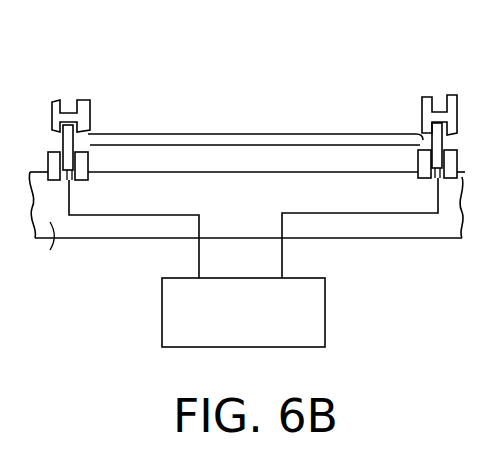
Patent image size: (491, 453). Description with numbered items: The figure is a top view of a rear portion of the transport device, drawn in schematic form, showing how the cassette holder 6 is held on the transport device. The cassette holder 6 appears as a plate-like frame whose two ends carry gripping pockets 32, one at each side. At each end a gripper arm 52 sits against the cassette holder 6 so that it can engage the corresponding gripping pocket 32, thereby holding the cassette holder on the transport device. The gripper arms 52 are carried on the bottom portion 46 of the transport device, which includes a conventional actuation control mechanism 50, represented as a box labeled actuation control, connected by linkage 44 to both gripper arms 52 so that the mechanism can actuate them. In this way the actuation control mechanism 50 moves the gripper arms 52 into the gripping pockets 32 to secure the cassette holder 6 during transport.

The cassette holder 6 is at (271, 140).
The gripping pocket 32 is at (92, 138).
The linkage 44 is at (112, 249).
The bottom portion 46 is at (247, 227).
The actuation control mechanism 50 is at (322, 307).
The gripper arm 52 is at (68, 146).